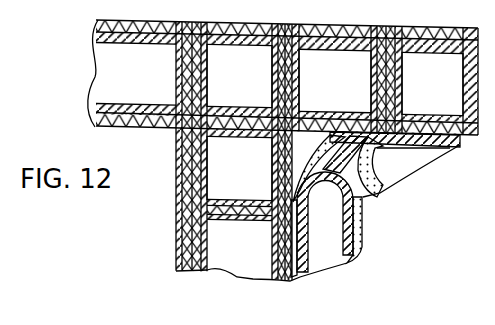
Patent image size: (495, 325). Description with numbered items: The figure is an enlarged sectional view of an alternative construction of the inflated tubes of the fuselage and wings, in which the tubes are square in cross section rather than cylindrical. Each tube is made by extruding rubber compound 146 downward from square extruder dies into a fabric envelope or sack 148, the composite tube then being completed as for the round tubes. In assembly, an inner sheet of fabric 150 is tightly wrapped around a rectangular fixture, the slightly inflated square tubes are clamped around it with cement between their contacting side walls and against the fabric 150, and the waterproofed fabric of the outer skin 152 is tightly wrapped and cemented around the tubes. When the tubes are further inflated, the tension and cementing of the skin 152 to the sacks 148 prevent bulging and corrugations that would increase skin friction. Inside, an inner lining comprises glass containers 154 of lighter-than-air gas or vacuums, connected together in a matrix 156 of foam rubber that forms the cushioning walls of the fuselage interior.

The rubber compound 146 is at (306, 59).
The fabric envelope or sack 148 is at (217, 43).
The inner sheet of fabric 150 is at (461, 137).
The outer skin 152 is at (287, 26).
The containers of lighter-than-air gas or vacuums 154 is at (375, 180).
The matrix of foam rubber 156 is at (363, 196).